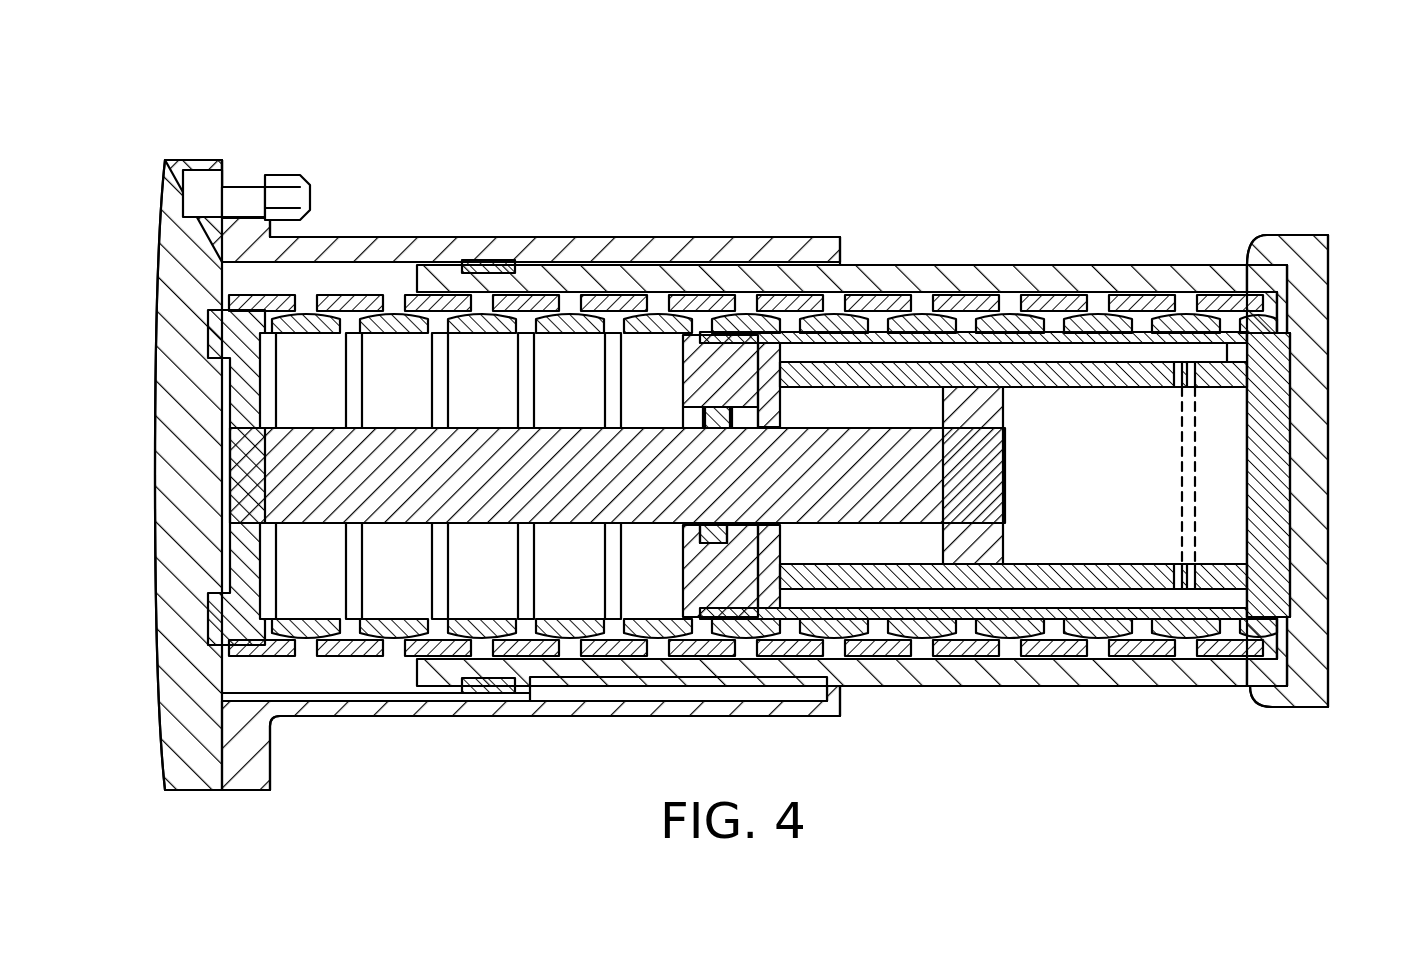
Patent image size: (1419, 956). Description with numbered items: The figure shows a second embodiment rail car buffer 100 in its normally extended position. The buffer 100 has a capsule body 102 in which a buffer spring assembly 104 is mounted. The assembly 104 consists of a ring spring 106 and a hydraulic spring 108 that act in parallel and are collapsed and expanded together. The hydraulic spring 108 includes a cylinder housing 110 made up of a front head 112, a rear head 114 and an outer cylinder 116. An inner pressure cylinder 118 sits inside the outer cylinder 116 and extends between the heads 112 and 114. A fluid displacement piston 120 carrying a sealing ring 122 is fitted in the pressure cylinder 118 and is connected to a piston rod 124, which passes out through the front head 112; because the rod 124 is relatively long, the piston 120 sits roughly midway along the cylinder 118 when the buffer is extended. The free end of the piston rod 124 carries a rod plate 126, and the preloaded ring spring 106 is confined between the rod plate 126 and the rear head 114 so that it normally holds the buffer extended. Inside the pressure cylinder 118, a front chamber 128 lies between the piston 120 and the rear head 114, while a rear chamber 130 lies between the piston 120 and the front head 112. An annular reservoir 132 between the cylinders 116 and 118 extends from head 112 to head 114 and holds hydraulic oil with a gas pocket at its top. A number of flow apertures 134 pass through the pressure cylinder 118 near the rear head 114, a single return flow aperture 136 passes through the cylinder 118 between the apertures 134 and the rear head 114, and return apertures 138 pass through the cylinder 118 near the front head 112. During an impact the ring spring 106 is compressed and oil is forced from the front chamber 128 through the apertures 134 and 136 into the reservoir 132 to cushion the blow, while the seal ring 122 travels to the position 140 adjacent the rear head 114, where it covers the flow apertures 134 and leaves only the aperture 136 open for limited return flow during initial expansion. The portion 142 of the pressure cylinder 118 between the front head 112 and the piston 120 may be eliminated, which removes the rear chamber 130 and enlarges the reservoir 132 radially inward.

The rail car buffer 100 is at (390, 152).
The capsule body 102 is at (624, 226).
The buffer spring assembly 104 is at (360, 675).
The ring spring 106 is at (392, 278).
The hydraulic spring 108 is at (665, 578).
The cylinder housing 110 is at (648, 397).
The front head 112 is at (680, 395).
The rear head 114 is at (1272, 408).
The outer cylinder 116 is at (1050, 606).
The inner pressure cylinder 118 is at (1020, 358).
The fluid displacement piston 120 is at (1006, 507).
The sealing ring 122 is at (993, 568).
The piston rod 124 is at (472, 526).
The rod plate 126 is at (270, 378).
The front chamber 128 is at (1102, 446).
The rear chamber 130 is at (927, 558).
The annular reservoir 132 is at (927, 353).
The flow apertures 134 is at (1191, 360).
The return flow aperture 136 is at (1212, 388).
The return apertures 138 is at (788, 352).
The position 140 is at (1180, 494).
The portion of pressure cylinder 142 is at (877, 427).